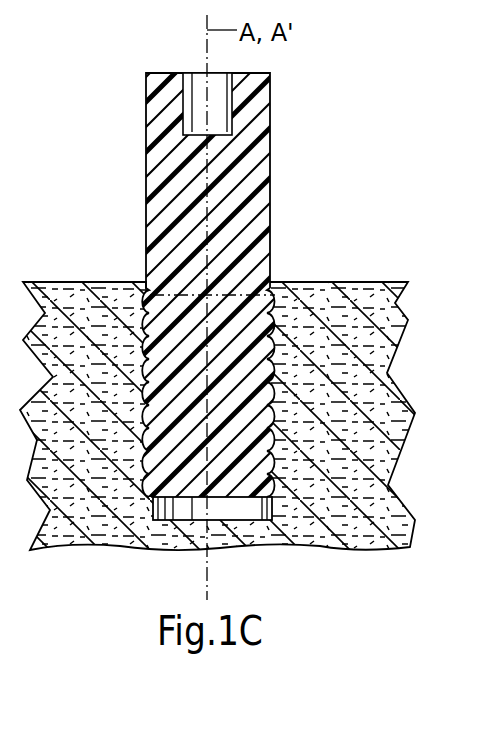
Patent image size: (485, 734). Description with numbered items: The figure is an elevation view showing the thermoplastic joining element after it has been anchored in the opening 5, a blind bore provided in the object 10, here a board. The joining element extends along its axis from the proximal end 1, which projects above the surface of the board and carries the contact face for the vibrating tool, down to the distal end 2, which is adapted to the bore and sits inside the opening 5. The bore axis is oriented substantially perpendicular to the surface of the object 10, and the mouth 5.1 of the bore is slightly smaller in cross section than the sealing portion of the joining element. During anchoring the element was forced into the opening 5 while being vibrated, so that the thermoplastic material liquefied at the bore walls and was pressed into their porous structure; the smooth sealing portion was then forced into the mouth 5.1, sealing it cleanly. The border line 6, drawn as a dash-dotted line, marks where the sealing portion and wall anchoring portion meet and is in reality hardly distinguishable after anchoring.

The proximal end 1 is at (130, 117).
The distal end 2 is at (130, 482).
The opening 5 is at (232, 508).
The mouth 5.1 is at (142, 272).
The border line 6 is at (188, 283).
The object 10 is at (358, 310).